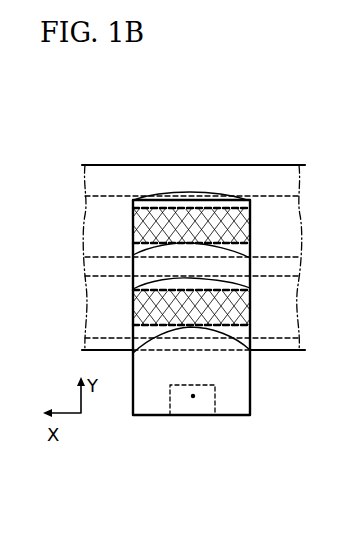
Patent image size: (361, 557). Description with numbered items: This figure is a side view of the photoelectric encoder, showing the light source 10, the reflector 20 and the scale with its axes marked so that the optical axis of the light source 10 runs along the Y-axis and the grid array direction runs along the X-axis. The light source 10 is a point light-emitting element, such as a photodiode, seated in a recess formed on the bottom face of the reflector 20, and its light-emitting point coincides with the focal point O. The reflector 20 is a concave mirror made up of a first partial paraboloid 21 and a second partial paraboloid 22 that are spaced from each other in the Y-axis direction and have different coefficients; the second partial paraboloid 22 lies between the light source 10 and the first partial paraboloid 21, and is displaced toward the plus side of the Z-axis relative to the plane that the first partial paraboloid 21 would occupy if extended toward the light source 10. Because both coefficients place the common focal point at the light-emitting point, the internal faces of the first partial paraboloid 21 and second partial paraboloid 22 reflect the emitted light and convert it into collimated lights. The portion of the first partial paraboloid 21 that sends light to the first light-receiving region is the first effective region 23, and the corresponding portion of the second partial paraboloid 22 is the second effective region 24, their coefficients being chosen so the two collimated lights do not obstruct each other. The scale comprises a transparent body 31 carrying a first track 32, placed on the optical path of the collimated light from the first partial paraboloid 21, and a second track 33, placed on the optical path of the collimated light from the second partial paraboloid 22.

The light source 10 is at (180, 416).
The reflector 20 is at (121, 420).
The first partial paraboloid 21 is at (149, 209).
The second partial paraboloid 22 is at (242, 333).
The first effective region 23 is at (184, 215).
The second effective region 24 is at (238, 306).
The transparent body 31 is at (256, 165).
The first track 32 is at (292, 233).
The second track 33 is at (292, 300).